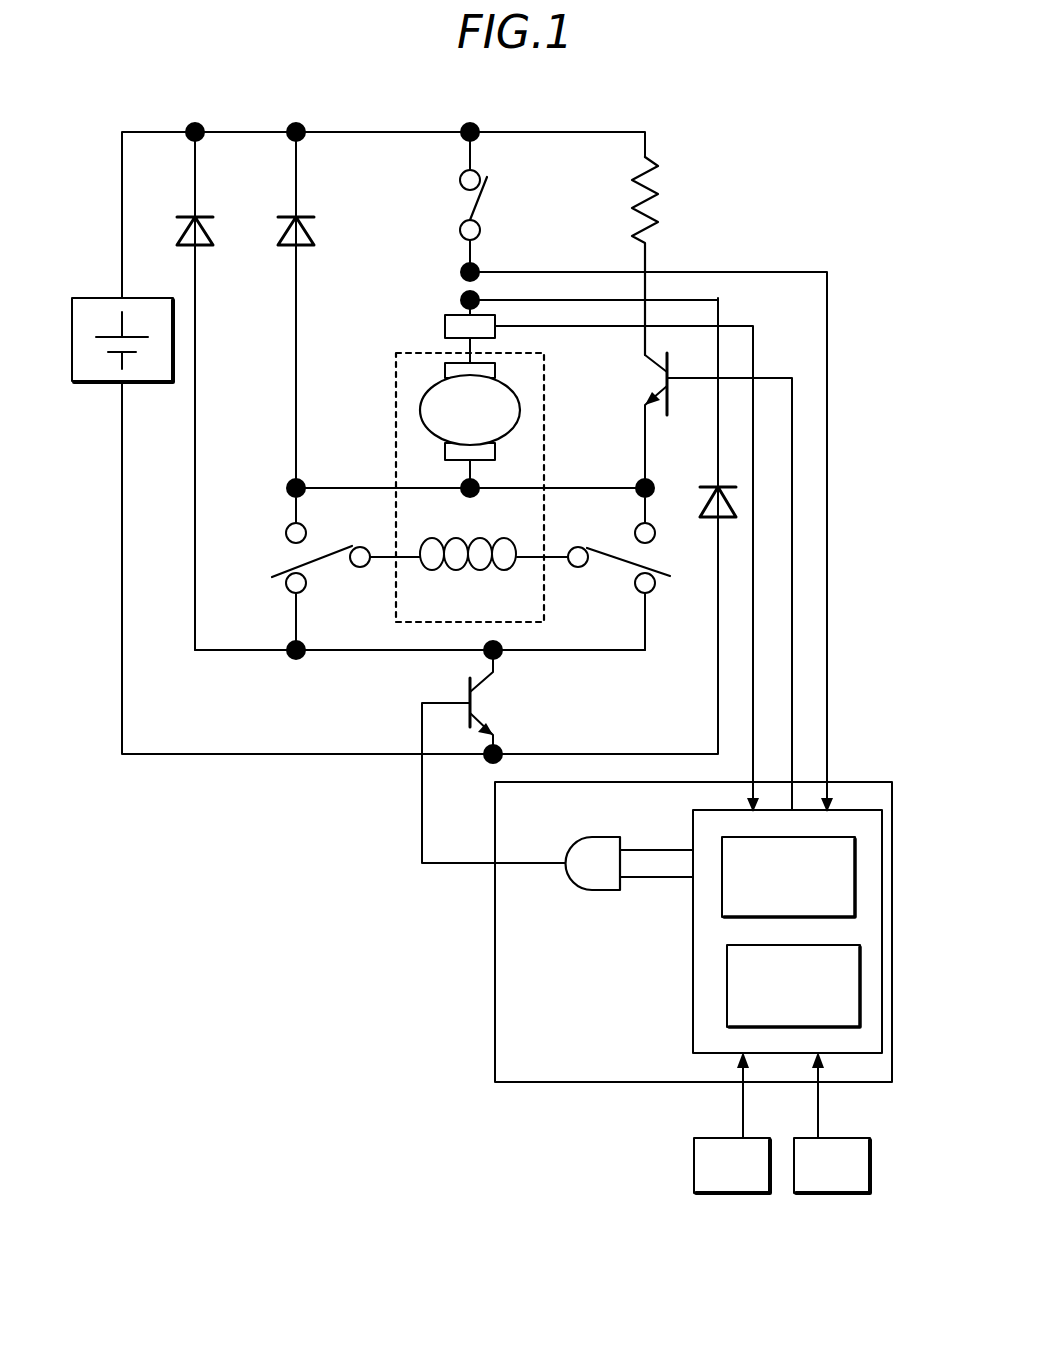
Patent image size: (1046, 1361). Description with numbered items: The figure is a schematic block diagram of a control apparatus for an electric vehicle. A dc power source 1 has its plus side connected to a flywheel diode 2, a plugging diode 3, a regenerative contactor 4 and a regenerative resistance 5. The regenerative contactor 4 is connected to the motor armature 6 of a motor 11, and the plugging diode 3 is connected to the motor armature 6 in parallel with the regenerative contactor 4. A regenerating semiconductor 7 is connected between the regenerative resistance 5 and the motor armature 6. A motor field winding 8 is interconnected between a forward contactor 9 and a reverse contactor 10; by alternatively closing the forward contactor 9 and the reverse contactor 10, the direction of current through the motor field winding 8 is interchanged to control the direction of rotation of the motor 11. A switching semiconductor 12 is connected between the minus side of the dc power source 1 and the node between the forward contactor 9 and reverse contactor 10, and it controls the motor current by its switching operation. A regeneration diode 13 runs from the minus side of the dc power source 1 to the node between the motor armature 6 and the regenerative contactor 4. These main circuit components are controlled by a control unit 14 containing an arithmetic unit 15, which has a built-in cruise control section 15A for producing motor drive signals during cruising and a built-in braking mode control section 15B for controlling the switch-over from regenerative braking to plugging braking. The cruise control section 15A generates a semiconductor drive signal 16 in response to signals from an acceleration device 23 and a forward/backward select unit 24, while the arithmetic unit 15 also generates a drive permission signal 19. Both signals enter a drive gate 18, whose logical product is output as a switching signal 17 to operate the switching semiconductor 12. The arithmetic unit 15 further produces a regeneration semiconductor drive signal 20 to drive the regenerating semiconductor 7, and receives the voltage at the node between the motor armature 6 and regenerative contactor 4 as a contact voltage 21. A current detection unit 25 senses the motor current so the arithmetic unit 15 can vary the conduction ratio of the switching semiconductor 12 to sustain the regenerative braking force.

The dc power source 1 is at (93, 381).
The flywheel diode 2 is at (205, 245).
The plugging diode 3 is at (306, 245).
The regenerative contactor 4 is at (481, 226).
The regenerative resistance 5 is at (660, 182).
The motor armature 6 is at (517, 425).
The regenerating semiconductor 7 is at (652, 404).
The motor field winding 8 is at (492, 545).
The forward contactor 9 is at (330, 583).
The reverse contactor 10 is at (608, 585).
The motor 11 is at (390, 373).
The switching semiconductor 12 is at (500, 722).
The regeneration diode 13 is at (706, 518).
The control unit 14 is at (866, 795).
The arithmetic unit 15 is at (786, 1058).
The cruise control section 15A is at (725, 994).
The braking mode control section 15B is at (722, 913).
The semiconductor drive signal 16 is at (666, 878).
The switching signal 17 is at (462, 864).
The drive gate 18 is at (600, 836).
The drive permission signal 19 is at (665, 849).
The regeneration semiconductor drive signal 20 is at (795, 625).
The contact voltage 21 is at (829, 680).
The acceleration device 23 is at (693, 1167).
The forward/backward select unit 24 is at (860, 1140).
The current detection unit 25 is at (448, 313).